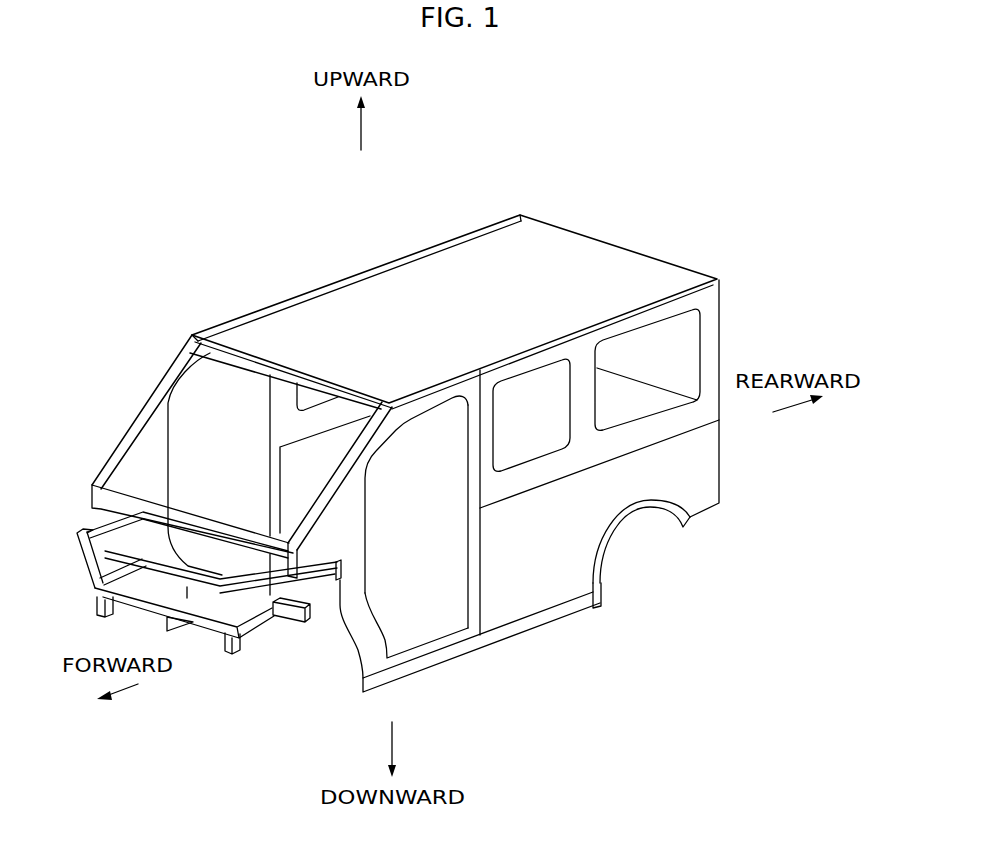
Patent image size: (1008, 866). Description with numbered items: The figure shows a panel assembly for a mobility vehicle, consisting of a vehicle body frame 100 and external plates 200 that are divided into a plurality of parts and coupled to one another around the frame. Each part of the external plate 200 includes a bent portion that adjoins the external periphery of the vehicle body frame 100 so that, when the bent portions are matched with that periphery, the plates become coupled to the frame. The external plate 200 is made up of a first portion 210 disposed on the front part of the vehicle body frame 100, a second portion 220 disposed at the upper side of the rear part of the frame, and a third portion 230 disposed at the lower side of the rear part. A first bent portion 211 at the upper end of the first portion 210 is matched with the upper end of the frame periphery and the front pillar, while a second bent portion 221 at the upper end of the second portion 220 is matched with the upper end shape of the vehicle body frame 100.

The vehicle body frame 100 is at (331, 268).
The external plate 200 is at (708, 513).
The first portion 210 is at (360, 633).
The first bent portion 211 is at (331, 494).
The second portion 220 is at (581, 370).
The second bent portion 221 is at (520, 353).
The third portion 230 is at (528, 590).